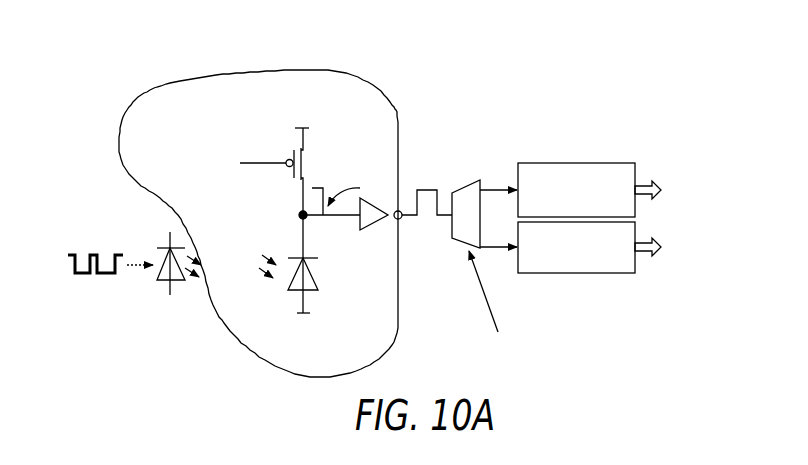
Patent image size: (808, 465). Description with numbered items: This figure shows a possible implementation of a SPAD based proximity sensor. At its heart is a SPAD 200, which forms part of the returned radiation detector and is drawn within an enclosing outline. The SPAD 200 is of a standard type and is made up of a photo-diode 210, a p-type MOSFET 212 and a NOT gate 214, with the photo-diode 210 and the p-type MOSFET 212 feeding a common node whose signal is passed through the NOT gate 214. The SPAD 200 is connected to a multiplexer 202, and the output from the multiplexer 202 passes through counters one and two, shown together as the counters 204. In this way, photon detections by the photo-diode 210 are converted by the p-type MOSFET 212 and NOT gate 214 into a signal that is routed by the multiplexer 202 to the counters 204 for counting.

The SPAD 200 is at (401, 109).
The multiplexer 202 is at (460, 240).
The counters 204 is at (622, 155).
The photo-diode 210 is at (288, 294).
The p-type MOSFET 212 is at (289, 159).
The NOT gate 214 is at (372, 223).